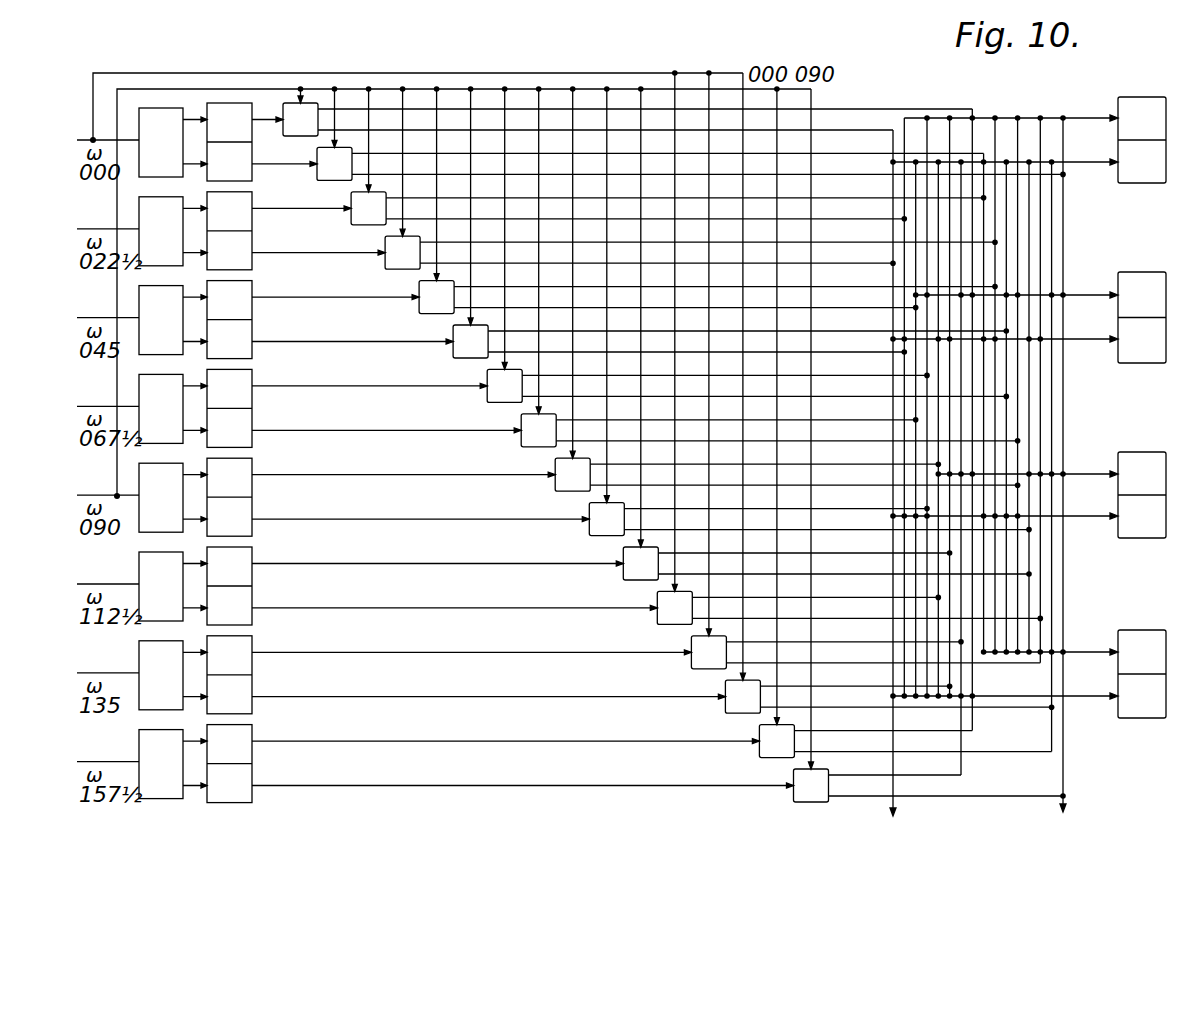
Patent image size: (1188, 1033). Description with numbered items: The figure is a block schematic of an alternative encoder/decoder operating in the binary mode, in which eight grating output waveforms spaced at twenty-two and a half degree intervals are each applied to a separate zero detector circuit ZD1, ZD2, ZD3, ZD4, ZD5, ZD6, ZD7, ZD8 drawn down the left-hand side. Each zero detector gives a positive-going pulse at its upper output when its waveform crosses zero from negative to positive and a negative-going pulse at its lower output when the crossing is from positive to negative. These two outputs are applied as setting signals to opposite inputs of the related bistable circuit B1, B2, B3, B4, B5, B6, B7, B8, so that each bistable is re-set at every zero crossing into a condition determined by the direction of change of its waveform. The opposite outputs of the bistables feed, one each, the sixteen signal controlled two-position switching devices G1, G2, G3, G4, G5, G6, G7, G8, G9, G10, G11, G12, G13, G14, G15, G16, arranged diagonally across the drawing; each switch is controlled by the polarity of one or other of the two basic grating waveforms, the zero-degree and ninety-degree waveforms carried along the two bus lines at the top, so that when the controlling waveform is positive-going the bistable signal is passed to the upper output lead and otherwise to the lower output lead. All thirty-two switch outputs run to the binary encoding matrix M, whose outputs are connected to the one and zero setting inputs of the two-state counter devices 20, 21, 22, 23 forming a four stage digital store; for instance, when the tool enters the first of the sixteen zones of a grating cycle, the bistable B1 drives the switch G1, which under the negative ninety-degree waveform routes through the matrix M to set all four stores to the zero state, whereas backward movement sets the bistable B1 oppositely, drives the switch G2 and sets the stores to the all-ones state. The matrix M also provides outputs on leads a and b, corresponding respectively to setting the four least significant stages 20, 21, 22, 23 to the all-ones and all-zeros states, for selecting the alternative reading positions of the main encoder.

The zero detector circuit ZD1 is at (161, 140).
The zero detector circuit ZD2 is at (161, 229).
The zero detector circuit ZD3 is at (161, 318).
The zero detector circuit ZD4 is at (161, 406).
The zero detector circuit ZD5 is at (161, 495).
The zero detector circuit ZD6 is at (161, 584).
The zero detector circuit ZD7 is at (161, 673).
The zero detector circuit ZD8 is at (161, 762).
The bistable circuit B1 is at (252, 141).
The bistable circuit B2 is at (252, 230).
The bistable circuit B3 is at (252, 319).
The bistable circuit B4 is at (252, 407).
The bistable circuit B5 is at (252, 496).
The bistable circuit B6 is at (252, 585).
The bistable circuit B7 is at (252, 674).
The bistable circuit B8 is at (252, 763).
The signal controlled two-position switching device G1 is at (627, 112).
The signal controlled two-position switching device G2 is at (691, 134).
The signal controlled two-position switching device G3 is at (668, 157).
The signal controlled two-position switching device G4 is at (691, 179).
The signal controlled two-position switching device G5 is at (708, 201).
The signal controlled two-position switching device G6 is at (731, 223).
The signal controlled two-position switching device G7 is at (748, 245).
The signal controlled two-position switching device G8 is at (770, 268).
The signal controlled two-position switching device G9 is at (787, 290).
The signal controlled two-position switching device G10 is at (810, 312).
The signal controlled two-position switching device G11 is at (827, 334).
The signal controlled two-position switching device G12 is at (850, 348).
The signal controlled two-position switching device G13 is at (865, 371).
The signal controlled two-position switching device G14 is at (889, 393).
The signal controlled two-position switching device G15 is at (905, 423).
The signal controlled two-position switching device G16 is at (930, 445).
The binary encoding matrix M is at (1014, 92).
The lead a is at (1074, 804).
The lead b is at (881, 809).
The binary counter device 20 is at (1116, 175).
The binary counter device 21 is at (1120, 283).
The binary counter device 22 is at (1126, 450).
The binary counter device 23 is at (1126, 633).